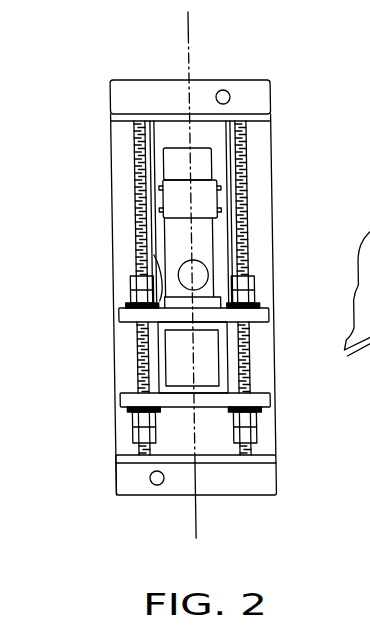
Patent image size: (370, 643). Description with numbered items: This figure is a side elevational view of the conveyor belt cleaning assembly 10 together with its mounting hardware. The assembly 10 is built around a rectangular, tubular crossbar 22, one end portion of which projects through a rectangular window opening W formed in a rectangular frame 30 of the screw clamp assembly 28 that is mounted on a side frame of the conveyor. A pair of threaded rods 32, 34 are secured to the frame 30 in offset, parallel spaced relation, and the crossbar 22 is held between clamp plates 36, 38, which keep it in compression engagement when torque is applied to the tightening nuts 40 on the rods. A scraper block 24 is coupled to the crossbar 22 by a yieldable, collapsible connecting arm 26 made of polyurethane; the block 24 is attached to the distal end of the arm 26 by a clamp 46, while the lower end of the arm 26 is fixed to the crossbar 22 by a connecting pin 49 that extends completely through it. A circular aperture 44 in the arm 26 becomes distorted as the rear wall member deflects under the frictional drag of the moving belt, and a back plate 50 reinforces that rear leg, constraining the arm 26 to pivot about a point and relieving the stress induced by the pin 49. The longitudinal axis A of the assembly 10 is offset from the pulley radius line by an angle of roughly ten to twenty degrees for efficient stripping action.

The conveyor belt cleaning assembly 10 is at (246, 50).
The rectangular crossbar 22 is at (214, 367).
The scraper block 24 is at (176, 155).
The connecting arm 26 is at (199, 245).
The screw clamp assembly 28 is at (270, 156).
The rectangular frame 30 is at (108, 172).
The threaded rod 32 is at (133, 258).
The threaded rod 34 is at (248, 264).
The clamp plate 36 is at (254, 399).
The clamp plate 38 is at (255, 318).
The tightening nut 40 is at (128, 287).
The circular aperture 44 is at (250, 287).
The clamp 46 is at (209, 200).
The connecting pin 49 is at (155, 188).
The back plate 50 is at (150, 255).
The longitudinal axis A is at (188, 26).
The rectangular window opening W is at (235, 125).